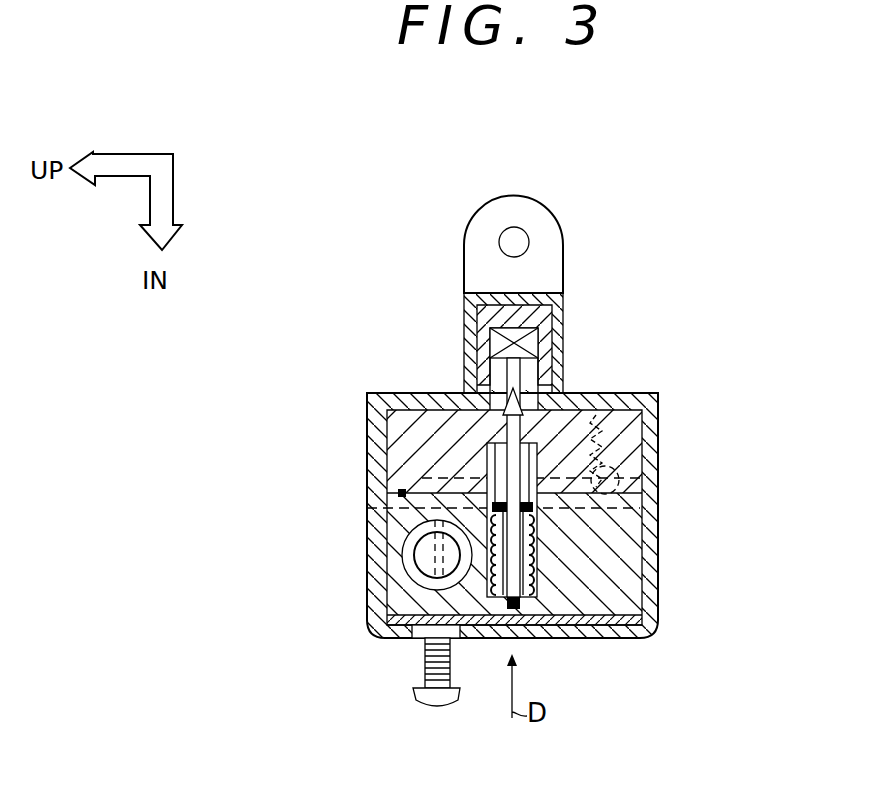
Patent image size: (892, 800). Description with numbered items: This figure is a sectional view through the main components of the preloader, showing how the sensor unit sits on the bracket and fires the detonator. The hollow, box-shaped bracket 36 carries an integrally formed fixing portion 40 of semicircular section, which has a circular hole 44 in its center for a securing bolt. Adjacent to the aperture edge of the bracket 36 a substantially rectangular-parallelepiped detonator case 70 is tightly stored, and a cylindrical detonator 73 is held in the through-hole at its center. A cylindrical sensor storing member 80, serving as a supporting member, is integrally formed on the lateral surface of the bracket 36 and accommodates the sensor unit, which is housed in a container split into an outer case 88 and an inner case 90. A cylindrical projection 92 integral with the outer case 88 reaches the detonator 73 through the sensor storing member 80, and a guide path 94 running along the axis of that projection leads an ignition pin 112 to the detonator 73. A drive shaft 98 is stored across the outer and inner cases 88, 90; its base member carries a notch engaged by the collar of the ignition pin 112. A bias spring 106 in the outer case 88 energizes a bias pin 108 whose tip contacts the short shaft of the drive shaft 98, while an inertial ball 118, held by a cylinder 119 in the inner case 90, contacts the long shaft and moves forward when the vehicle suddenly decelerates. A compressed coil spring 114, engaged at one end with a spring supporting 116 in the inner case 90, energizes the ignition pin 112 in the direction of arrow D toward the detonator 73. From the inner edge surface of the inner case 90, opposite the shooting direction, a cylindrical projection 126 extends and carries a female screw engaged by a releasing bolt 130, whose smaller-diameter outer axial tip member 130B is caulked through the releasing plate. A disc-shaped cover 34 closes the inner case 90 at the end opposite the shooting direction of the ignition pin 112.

The cover 34 is at (617, 626).
The bracket 36 is at (563, 303).
The fixing portion 40 is at (565, 238).
The circular hole 44 is at (513, 228).
The detonator case 70 is at (565, 330).
The detonator 73 is at (498, 343).
The sensor storing member 80 is at (660, 396).
The outer case 88 is at (397, 462).
The inner case 90 is at (628, 603).
The cylindrical projection 92 is at (490, 388).
The guide path 94 is at (518, 378).
The drive shaft 98 is at (367, 508).
The bias spring 106 is at (596, 437).
The bias pin 108 is at (618, 476).
The ignition pin 112 is at (658, 527).
The compressed coil spring 114 is at (543, 556).
The spring supporting 116 is at (592, 640).
The inertial ball 118 is at (420, 557).
The cylinder 119 is at (400, 583).
The cylindrical projection 126 is at (413, 634).
The releasing bolt 130 is at (435, 707).
The outer axial tip member 130B is at (417, 676).